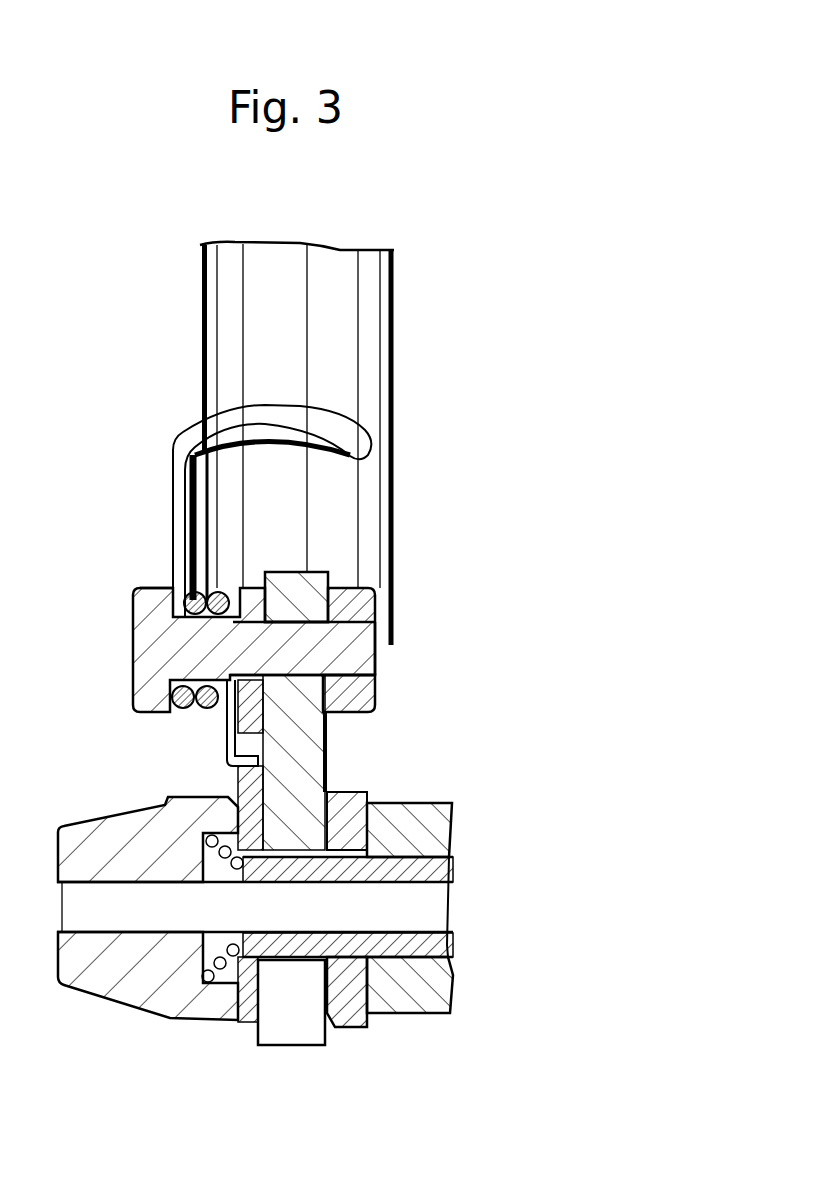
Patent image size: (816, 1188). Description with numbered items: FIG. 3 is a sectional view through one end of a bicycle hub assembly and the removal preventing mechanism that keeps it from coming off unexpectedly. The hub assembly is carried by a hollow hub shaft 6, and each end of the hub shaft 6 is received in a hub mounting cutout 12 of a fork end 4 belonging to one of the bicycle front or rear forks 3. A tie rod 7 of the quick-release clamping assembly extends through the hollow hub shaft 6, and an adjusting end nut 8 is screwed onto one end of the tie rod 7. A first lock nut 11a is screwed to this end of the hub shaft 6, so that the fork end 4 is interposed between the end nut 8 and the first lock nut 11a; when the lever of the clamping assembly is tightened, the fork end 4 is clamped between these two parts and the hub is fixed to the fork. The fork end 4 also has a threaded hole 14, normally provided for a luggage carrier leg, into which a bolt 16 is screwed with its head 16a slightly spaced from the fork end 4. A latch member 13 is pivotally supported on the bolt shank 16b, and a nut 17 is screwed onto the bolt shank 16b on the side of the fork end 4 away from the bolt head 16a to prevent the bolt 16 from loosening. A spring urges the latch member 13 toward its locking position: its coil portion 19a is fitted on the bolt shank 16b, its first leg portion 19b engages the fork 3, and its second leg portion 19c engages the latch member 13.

The fork 3 is at (203, 335).
The fork end 4 is at (332, 780).
The hollow hub shaft 6 is at (425, 848).
The tie rod 7 is at (145, 915).
The adjusting end nut 8 is at (105, 810).
The first lock nut 11a is at (352, 1030).
The hub mounting cutout 12 is at (293, 1003).
The latch member 13 is at (242, 1023).
The threaded hole 14 is at (363, 658).
The bolt 16 is at (135, 662).
The bolt head 16a is at (137, 626).
The bolt shank 16b is at (380, 650).
The nut 17 is at (378, 688).
The coil portion 19a is at (193, 593).
The first leg portion 19b is at (347, 420).
The second leg portion 19c is at (227, 748).